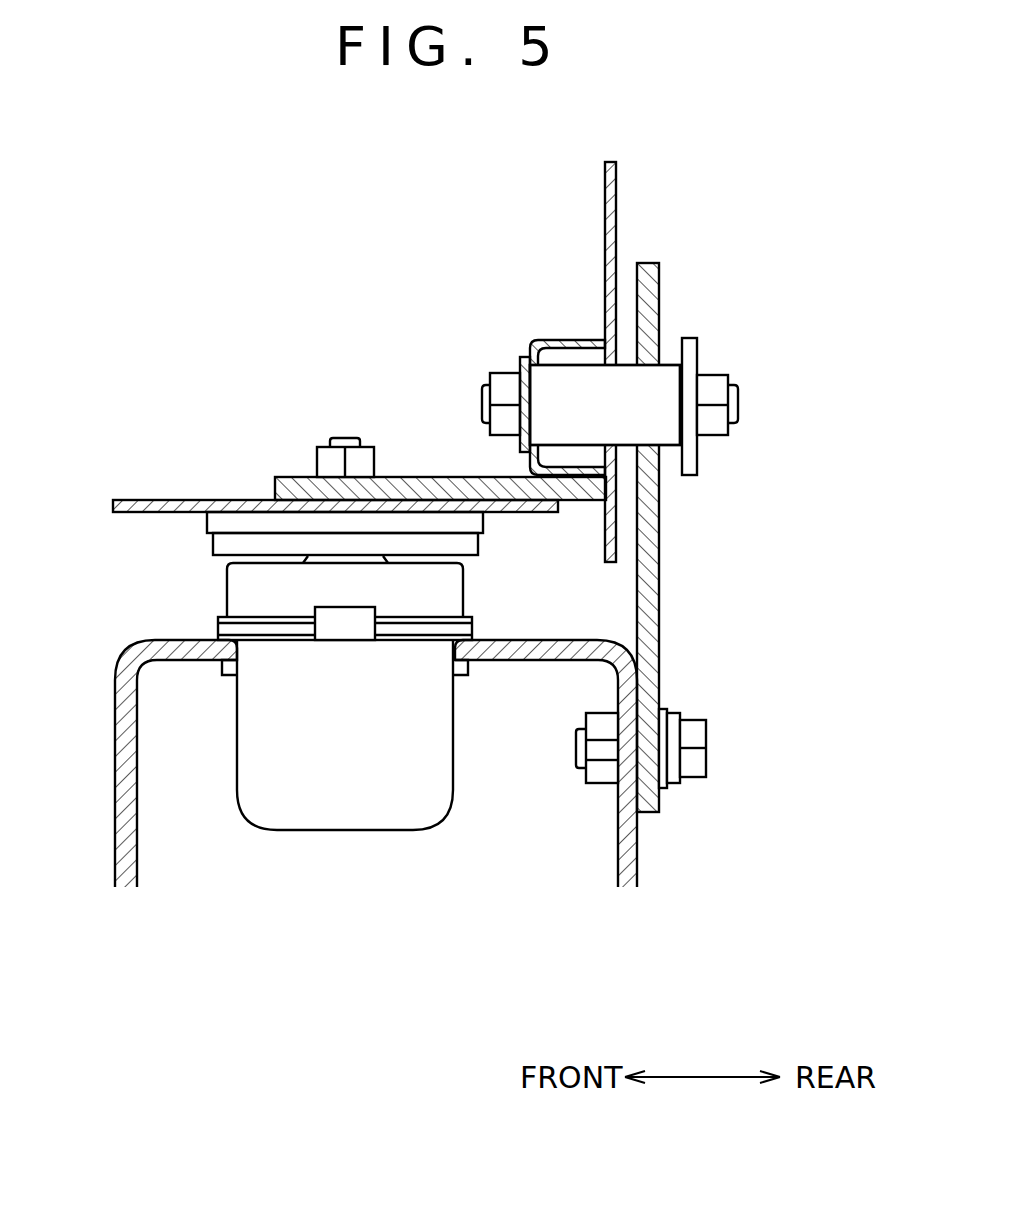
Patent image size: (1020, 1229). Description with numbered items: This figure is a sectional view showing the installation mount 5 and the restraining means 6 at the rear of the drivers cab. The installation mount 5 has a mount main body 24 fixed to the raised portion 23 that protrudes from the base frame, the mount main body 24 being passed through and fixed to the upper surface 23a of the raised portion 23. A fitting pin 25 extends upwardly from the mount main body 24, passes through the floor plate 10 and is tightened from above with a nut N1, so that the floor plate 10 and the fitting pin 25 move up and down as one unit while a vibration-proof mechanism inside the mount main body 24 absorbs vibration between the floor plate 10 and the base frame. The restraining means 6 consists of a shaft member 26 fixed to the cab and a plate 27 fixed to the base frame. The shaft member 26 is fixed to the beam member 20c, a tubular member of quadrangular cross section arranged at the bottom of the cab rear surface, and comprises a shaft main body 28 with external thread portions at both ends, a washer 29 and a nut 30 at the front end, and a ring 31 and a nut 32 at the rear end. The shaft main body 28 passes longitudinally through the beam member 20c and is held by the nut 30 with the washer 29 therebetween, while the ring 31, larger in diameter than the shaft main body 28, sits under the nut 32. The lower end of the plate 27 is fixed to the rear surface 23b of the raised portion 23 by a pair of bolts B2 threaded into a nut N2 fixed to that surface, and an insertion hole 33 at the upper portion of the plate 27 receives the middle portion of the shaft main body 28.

The installation mount 5 is at (422, 858).
The restraining means 6 is at (792, 547).
The floor plate 10 is at (143, 500).
The beam member 20c is at (563, 340).
The raised portion 23 is at (385, 721).
The upper surface 23a is at (558, 640).
The rear surface 23b is at (637, 850).
The mount main body 24 is at (340, 813).
The fitting pin 25 is at (345, 438).
The shaft member 26 is at (685, 503).
The plate 27 is at (659, 650).
The shaft main body 28 is at (665, 397).
The washer 29 is at (525, 355).
The nut 30 is at (497, 385).
The ring 31 is at (690, 338).
The nut 32 is at (715, 437).
The insertion hole 33 is at (660, 360).
The nut N1 is at (313, 457).
The nut N2 is at (600, 783).
The bolt B2 is at (706, 755).